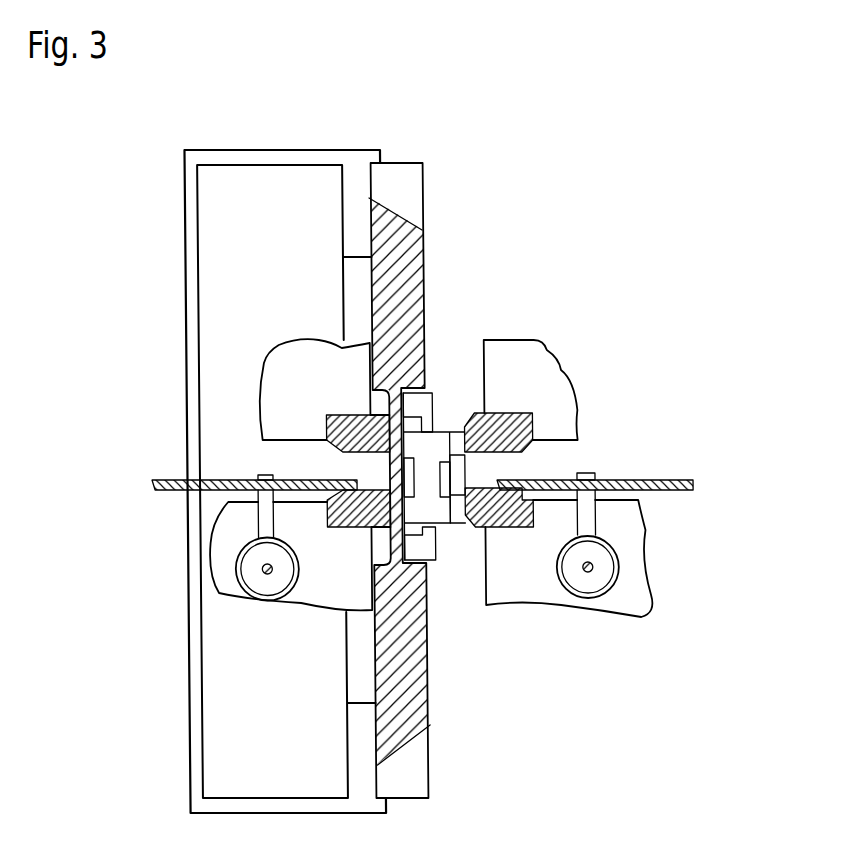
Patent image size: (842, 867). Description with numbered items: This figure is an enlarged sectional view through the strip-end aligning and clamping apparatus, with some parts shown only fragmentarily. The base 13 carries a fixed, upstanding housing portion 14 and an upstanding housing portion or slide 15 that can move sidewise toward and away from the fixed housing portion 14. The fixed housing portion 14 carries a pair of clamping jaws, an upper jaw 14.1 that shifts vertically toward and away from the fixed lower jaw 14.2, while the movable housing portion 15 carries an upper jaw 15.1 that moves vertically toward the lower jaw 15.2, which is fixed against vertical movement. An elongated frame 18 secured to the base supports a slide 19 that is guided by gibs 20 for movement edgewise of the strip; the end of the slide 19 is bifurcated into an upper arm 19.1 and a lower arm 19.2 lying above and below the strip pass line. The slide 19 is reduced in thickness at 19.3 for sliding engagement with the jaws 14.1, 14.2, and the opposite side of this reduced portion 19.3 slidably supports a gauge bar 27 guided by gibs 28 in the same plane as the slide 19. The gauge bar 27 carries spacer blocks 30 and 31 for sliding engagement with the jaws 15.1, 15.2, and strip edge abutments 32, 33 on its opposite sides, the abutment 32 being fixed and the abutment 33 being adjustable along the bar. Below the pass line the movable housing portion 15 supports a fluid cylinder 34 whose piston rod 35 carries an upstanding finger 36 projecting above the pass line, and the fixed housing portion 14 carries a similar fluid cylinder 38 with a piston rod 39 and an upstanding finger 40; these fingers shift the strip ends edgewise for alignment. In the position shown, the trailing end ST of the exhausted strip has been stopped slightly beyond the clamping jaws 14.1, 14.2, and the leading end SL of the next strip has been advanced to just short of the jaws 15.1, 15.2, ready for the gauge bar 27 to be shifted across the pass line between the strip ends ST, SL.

The base 13 is at (308, 612).
The fixed housing portion 14 is at (294, 336).
The upper jaw 14.1 is at (378, 446).
The lower jaw 14.2 is at (378, 521).
The movable housing portion or slide 15 is at (563, 362).
The upper jaw 15.1 is at (517, 446).
The lower jaw 15.2 is at (517, 521).
The frame 18 is at (272, 145).
The slide 19 is at (420, 481).
The upper arm 19.1 is at (418, 290).
The lower arm 19.2 is at (420, 688).
The reduced thickness portion of slide 19.3 is at (397, 412).
The gibs 20 is at (402, 170).
The gauge bar 27 is at (434, 476).
The gibs 28 is at (425, 402).
The spacer block 30 is at (457, 462).
The spacer block 31 is at (450, 522).
The strip edge abutment 32 is at (405, 482).
The strip edge abutment 33 is at (443, 470).
The fluid cylinder 34 is at (600, 598).
The piston rod 35 is at (582, 567).
The upstanding finger 36 is at (589, 473).
The fluid cylinder 38 is at (270, 598).
The piston rod 39 is at (272, 570).
The upstanding finger 40 is at (266, 475).
The trailing end of strip ST is at (167, 480).
The leading end of strip SL is at (650, 480).